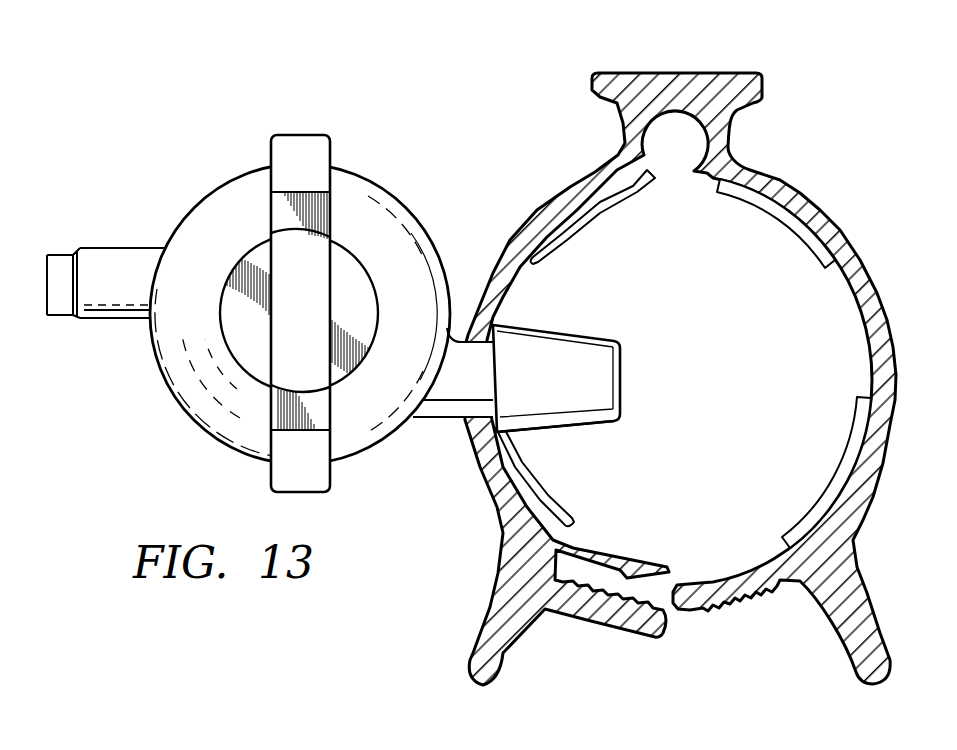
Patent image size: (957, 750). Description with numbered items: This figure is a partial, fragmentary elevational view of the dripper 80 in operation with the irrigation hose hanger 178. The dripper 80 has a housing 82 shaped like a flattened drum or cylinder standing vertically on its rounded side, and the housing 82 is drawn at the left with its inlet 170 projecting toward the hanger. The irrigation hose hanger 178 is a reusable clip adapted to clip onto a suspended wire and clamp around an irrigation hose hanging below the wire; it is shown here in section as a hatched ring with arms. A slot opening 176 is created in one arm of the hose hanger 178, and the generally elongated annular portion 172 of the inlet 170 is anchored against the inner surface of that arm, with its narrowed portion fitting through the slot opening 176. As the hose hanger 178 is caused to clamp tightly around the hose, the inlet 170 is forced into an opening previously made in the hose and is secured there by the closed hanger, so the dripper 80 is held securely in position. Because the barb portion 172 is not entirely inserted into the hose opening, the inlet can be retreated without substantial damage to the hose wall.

The dripper 80 is at (414, 163).
The housing 82 is at (339, 168).
The inlet 170 is at (612, 429).
The elongated annular portion 172 is at (600, 338).
The slot opening 176 is at (506, 316).
The irrigation hose hanger 178 is at (810, 97).